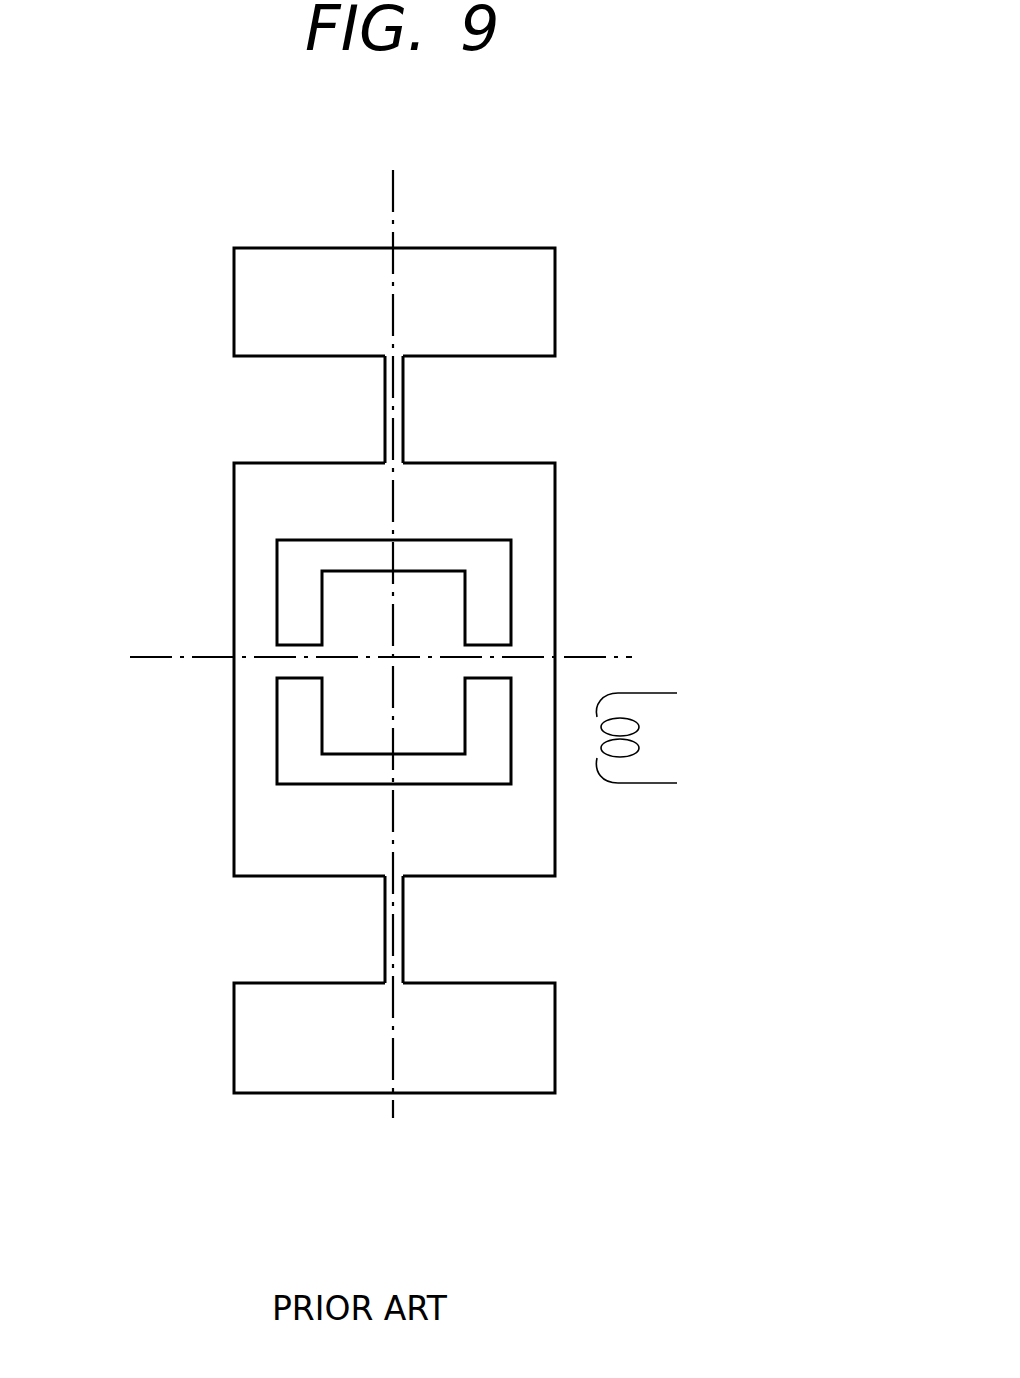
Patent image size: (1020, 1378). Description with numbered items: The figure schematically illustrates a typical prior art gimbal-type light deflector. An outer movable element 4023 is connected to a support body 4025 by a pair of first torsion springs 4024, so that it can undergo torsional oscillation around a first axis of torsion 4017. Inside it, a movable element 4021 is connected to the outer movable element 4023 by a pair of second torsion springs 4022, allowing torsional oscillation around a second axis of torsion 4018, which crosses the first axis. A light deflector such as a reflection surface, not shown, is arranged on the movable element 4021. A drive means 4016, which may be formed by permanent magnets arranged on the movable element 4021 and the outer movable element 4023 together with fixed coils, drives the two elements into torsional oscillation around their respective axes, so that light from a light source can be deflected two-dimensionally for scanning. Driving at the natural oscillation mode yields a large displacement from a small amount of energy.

The drive means 4016 is at (647, 690).
The first axis of torsion 4017 is at (392, 185).
The second axis of torsion 4018 is at (150, 657).
The movable element 4021 is at (432, 605).
The second torsion springs 4022 is at (303, 678).
The outer movable element 4023 is at (520, 478).
The first torsion springs 4024 is at (403, 402).
The support body 4025 is at (527, 263).